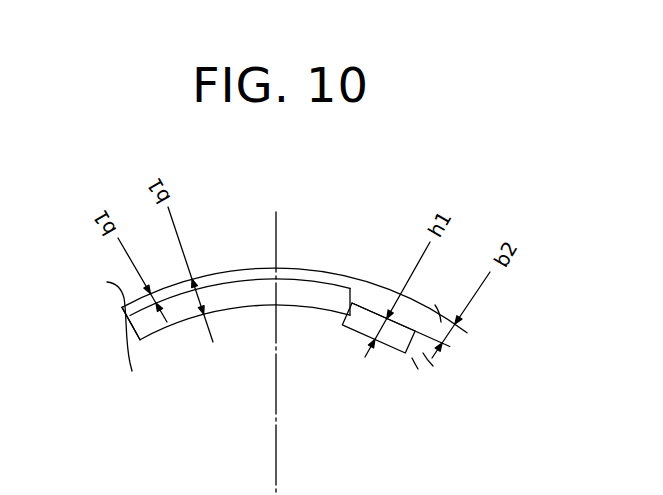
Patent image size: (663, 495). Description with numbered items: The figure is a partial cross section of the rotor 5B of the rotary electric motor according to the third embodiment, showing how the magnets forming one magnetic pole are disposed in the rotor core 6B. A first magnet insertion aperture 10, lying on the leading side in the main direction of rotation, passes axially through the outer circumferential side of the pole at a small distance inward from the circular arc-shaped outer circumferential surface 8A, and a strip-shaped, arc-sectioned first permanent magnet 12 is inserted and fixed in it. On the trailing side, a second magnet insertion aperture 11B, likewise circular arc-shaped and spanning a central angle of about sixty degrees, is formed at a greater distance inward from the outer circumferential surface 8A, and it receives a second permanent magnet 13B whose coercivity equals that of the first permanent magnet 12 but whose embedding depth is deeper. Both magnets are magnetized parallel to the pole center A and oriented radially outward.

The rotor 5B is at (94, 153).
The rotor core 6B is at (121, 304).
The outer bridge portion 8A is at (314, 270).
The first magnet insertion aperture 10 is at (251, 285).
The second magnet insertion aperture 11B is at (377, 313).
The first permanent magnet 12 is at (152, 320).
The second permanent magnet 13B is at (364, 330).
The pole center A is at (274, 436).